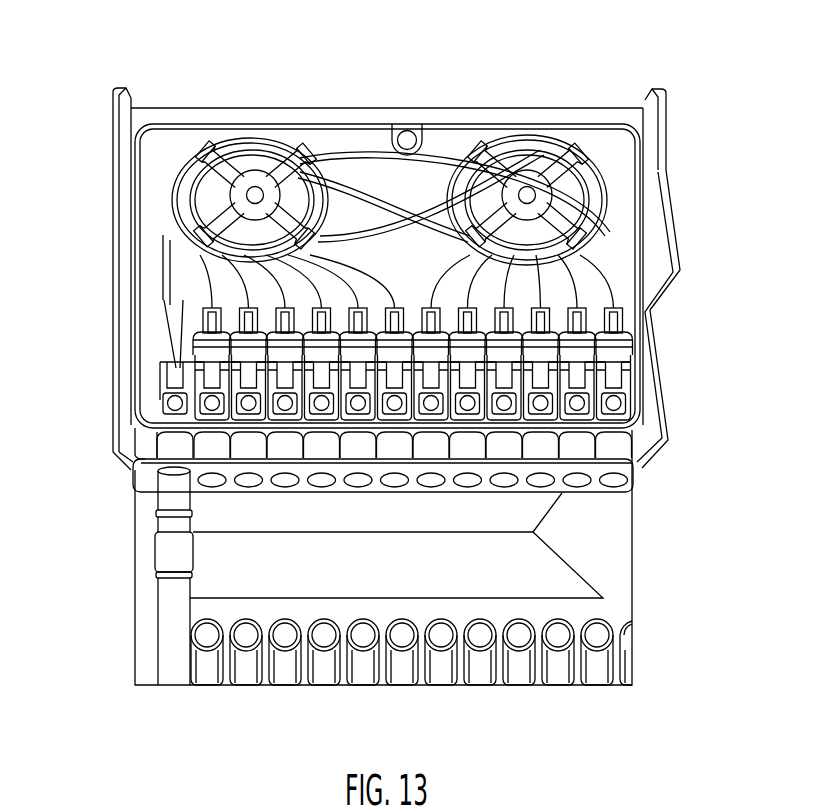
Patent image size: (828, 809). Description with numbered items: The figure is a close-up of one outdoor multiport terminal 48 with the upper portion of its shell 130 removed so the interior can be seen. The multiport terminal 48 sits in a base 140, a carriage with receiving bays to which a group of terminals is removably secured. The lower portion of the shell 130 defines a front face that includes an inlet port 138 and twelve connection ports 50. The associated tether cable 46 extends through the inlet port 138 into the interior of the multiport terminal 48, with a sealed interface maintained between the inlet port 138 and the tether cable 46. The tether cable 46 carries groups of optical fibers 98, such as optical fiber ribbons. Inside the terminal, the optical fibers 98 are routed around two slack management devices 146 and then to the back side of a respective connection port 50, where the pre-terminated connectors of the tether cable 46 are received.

The tether cable 46 is at (170, 621).
The multiport terminal 48 is at (106, 373).
The connection port 50 is at (610, 462).
The optical fiber 98 is at (590, 207).
The shell 130 is at (197, 124).
The inlet port 138 is at (160, 473).
The base 140 is at (113, 100).
The slack management device 146 is at (283, 168).